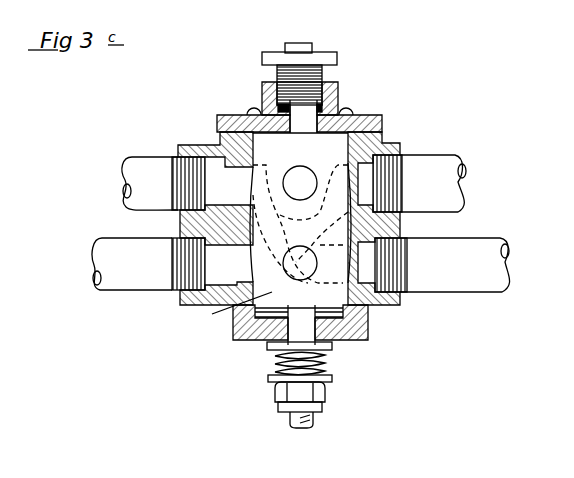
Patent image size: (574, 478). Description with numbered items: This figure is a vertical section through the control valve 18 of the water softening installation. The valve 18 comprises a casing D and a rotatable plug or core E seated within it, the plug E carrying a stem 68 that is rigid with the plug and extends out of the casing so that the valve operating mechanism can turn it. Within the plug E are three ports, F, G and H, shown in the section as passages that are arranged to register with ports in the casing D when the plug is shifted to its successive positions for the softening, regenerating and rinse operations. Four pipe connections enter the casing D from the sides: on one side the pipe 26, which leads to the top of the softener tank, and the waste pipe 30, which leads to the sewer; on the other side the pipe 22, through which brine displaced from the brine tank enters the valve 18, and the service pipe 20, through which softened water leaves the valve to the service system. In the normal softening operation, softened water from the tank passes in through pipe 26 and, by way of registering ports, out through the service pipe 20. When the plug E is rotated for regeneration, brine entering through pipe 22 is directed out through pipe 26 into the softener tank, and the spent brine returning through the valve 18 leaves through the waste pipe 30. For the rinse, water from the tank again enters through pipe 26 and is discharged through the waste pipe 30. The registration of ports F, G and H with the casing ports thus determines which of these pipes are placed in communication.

The valve 18 is at (382, 132).
The service pipe 20 is at (462, 242).
The pipe 22 is at (415, 158).
The pipe 26 is at (165, 160).
The waste pipe 30 is at (150, 295).
The stem 68 is at (290, 420).
The casing D is at (226, 146).
The plug E is at (234, 312).
The port F is at (302, 172).
The port G is at (298, 217).
The port H is at (314, 213).